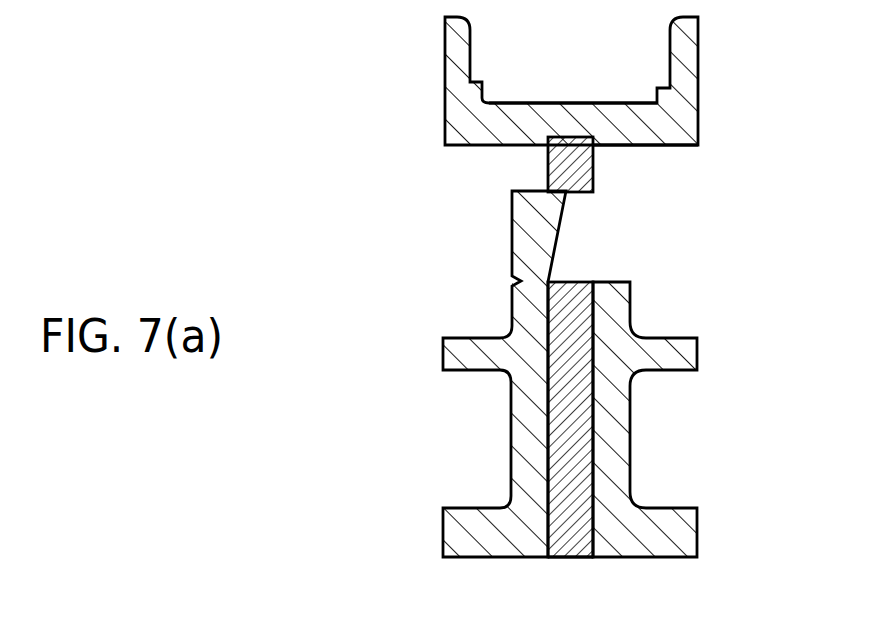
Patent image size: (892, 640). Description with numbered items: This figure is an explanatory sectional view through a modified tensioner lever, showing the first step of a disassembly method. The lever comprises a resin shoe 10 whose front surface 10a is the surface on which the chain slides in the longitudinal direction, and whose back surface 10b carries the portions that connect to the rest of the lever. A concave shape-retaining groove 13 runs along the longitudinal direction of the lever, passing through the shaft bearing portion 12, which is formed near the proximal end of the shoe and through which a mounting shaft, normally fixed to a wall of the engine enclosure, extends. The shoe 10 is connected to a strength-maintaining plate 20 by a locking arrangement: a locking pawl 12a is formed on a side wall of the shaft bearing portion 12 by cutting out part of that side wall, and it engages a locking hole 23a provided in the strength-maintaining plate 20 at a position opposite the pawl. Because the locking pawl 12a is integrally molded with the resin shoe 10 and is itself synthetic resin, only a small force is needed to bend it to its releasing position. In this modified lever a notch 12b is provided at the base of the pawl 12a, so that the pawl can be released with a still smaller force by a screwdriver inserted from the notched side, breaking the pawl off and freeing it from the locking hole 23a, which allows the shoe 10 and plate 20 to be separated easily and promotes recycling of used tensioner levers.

The shoe 10 is at (698, 100).
The front surface 10a is at (542, 103).
The back surface 10b is at (642, 147).
The shape-retaining groove 13 is at (587, 135).
The shaft bearing portion 12 is at (432, 250).
The locking pawl 12a is at (510, 212).
The notch 12b is at (513, 280).
The locking hole 23a is at (583, 282).
The strength-maintaining plate 20 is at (583, 555).